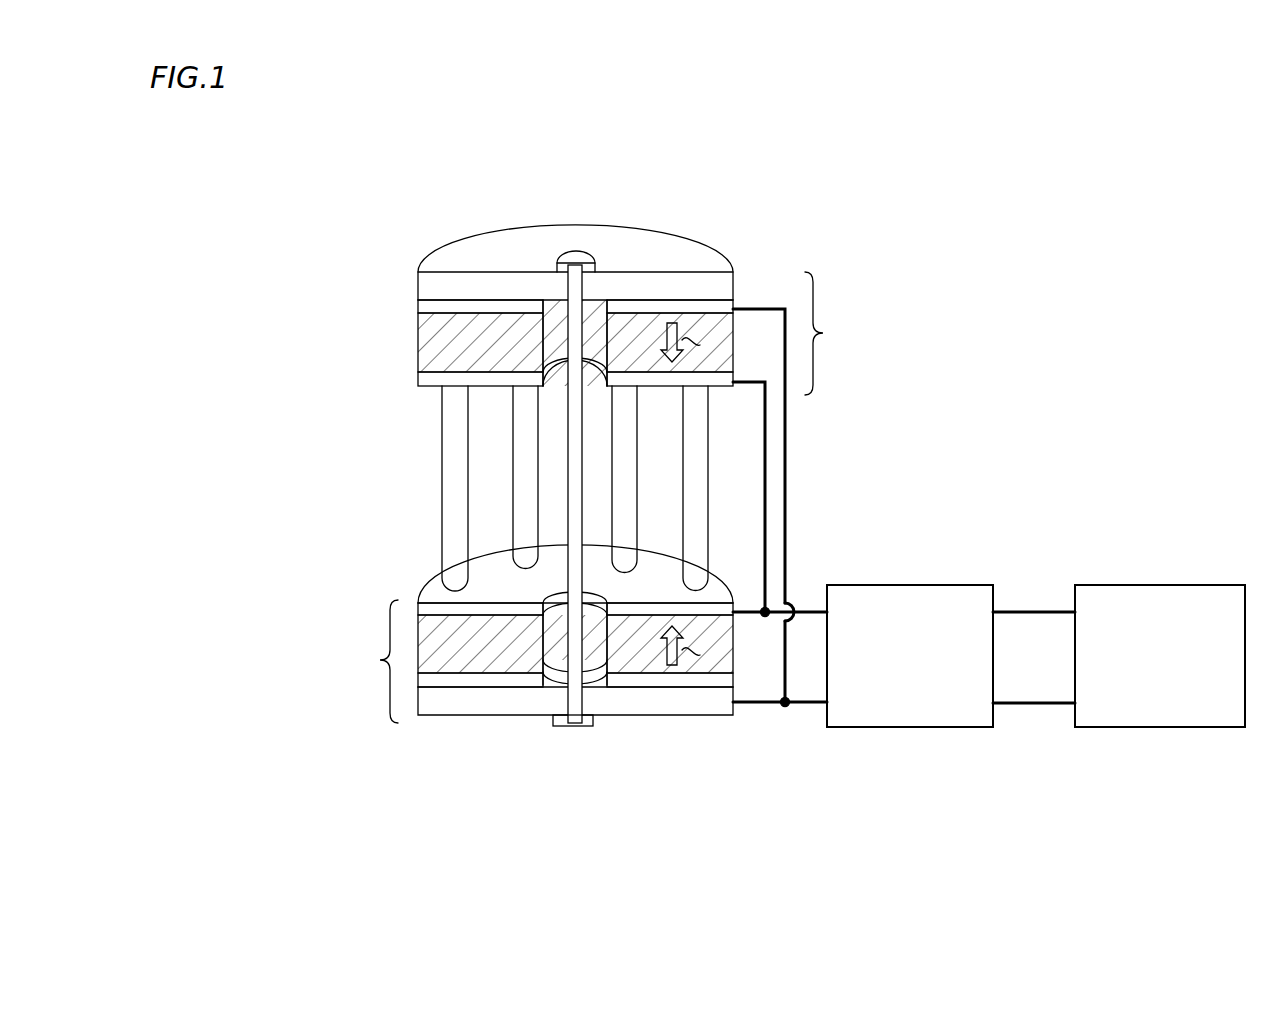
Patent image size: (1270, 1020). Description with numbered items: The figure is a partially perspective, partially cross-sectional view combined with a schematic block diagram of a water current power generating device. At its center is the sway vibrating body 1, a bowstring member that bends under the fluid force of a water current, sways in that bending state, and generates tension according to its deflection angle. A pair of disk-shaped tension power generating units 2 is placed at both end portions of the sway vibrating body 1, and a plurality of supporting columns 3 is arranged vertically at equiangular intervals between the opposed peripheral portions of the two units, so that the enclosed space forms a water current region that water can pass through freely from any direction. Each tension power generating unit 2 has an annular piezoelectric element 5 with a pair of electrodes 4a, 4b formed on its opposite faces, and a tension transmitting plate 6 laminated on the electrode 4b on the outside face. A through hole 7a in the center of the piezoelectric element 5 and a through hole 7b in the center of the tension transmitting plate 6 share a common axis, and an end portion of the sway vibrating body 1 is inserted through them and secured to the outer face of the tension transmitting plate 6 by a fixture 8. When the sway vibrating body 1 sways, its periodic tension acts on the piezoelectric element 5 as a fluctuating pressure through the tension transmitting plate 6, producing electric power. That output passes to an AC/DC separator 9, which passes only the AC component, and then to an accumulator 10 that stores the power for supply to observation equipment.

The sway vibrating body 1 is at (575, 458).
The tension power generating unit 2 is at (762, 497).
The supporting column 3 is at (445, 505).
The electrode 4a is at (432, 380).
The electrode 4b is at (418, 305).
The piezoelectric element 5 is at (432, 340).
The tension transmitting plate 6 is at (725, 283).
The through hole 7a is at (553, 318).
The through hole 7b is at (572, 282).
The fixture 8 is at (583, 257).
The AC/DC separator 9 is at (937, 585).
The accumulator 10 is at (1187, 585).